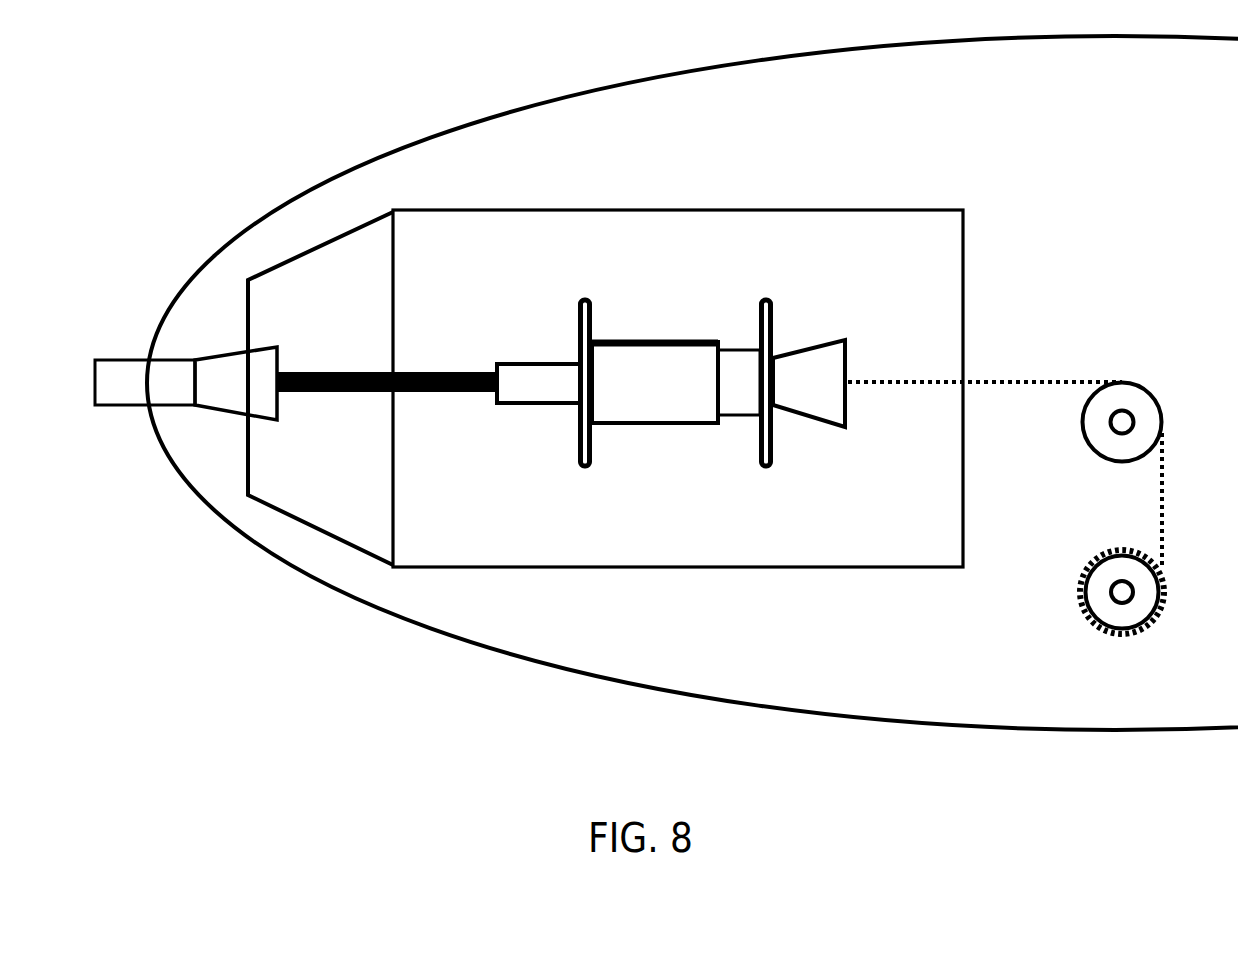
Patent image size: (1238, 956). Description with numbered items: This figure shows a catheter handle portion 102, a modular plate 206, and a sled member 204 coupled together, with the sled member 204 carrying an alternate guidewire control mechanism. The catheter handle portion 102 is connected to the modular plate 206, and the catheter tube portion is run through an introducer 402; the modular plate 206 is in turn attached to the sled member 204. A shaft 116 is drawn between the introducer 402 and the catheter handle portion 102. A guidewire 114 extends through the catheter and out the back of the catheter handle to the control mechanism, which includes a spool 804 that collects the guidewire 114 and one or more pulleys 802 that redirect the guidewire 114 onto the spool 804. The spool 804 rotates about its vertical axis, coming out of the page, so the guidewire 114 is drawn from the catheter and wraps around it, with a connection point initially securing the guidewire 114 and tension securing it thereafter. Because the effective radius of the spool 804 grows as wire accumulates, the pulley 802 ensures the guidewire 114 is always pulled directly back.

The catheter handle portion 102 is at (540, 335).
The guidewire 114 is at (1028, 381).
The rigid shaft / rod 116 is at (327, 372).
The sled member 204 is at (395, 614).
The modular plate 206 is at (782, 210).
The introducer 402 is at (116, 360).
The pulley 802 is at (1122, 383).
The spool 804 is at (1100, 565).